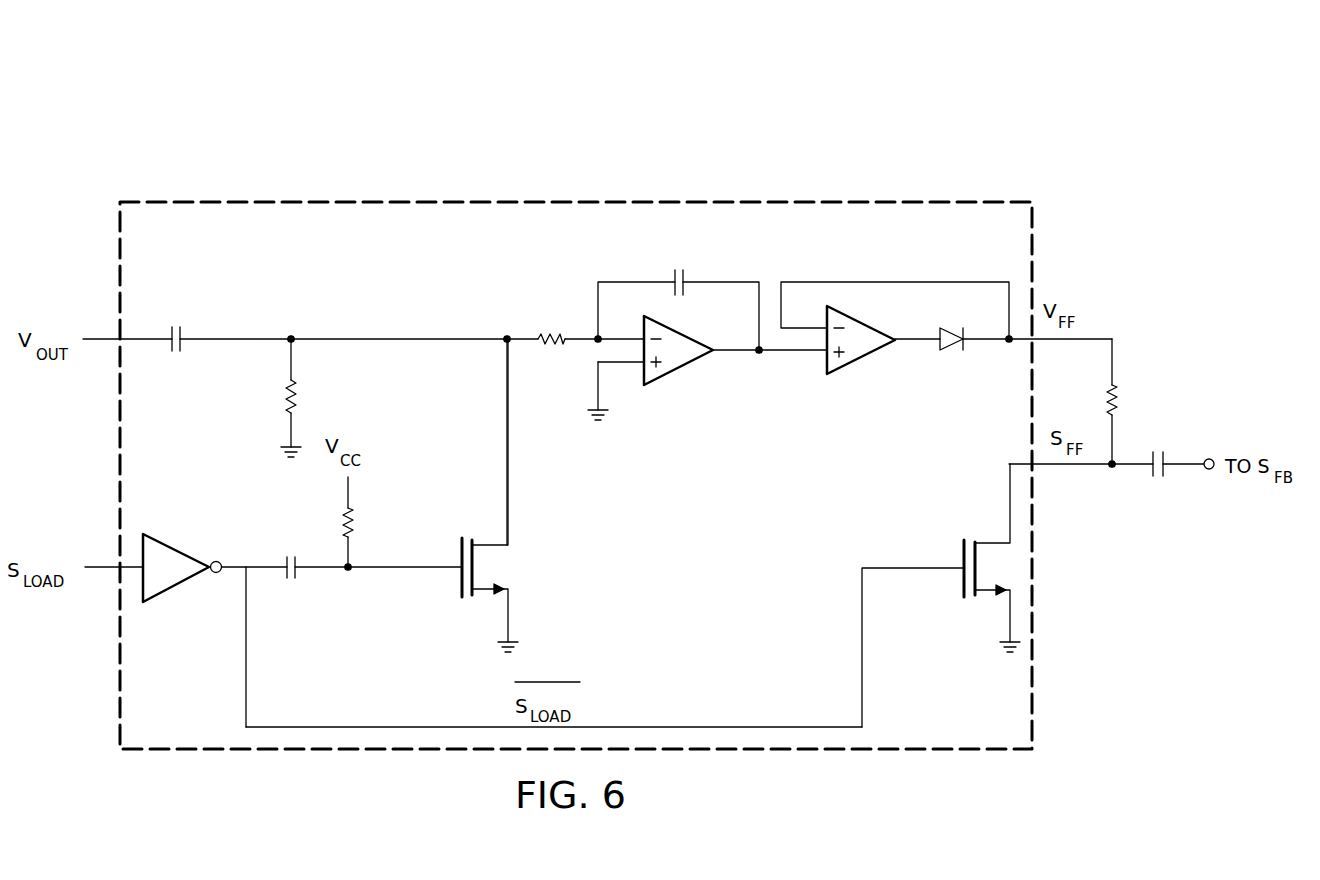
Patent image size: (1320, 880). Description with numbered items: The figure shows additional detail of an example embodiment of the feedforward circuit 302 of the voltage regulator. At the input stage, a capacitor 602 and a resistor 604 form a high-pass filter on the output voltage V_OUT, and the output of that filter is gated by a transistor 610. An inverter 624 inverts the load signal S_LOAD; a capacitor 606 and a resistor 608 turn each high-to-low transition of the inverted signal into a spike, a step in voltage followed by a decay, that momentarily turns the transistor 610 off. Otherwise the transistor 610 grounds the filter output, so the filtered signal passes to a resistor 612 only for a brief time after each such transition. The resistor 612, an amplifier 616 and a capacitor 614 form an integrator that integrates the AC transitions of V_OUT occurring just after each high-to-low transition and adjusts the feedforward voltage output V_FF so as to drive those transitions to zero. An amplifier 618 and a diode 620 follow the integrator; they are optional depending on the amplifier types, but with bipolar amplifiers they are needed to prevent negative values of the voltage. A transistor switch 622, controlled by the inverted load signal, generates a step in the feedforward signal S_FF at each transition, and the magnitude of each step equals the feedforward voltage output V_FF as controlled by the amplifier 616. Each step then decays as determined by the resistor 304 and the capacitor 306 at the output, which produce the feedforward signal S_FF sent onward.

The feedforward circuit 302 is at (504, 200).
The resistor 304 is at (1121, 400).
The capacitor 306 is at (1157, 478).
The capacitor 602 is at (176, 325).
The resistor 604 is at (285, 393).
The capacitor 606 is at (291, 582).
The resistor 608 is at (355, 526).
The transistor 610 is at (459, 578).
The resistor 612 is at (550, 331).
The capacitor 614 is at (680, 268).
The amplifier 616 is at (681, 373).
The amplifier 618 is at (866, 362).
The diode 620 is at (951, 352).
The transistor switch 622 is at (960, 578).
The inverter 624 is at (177, 590).